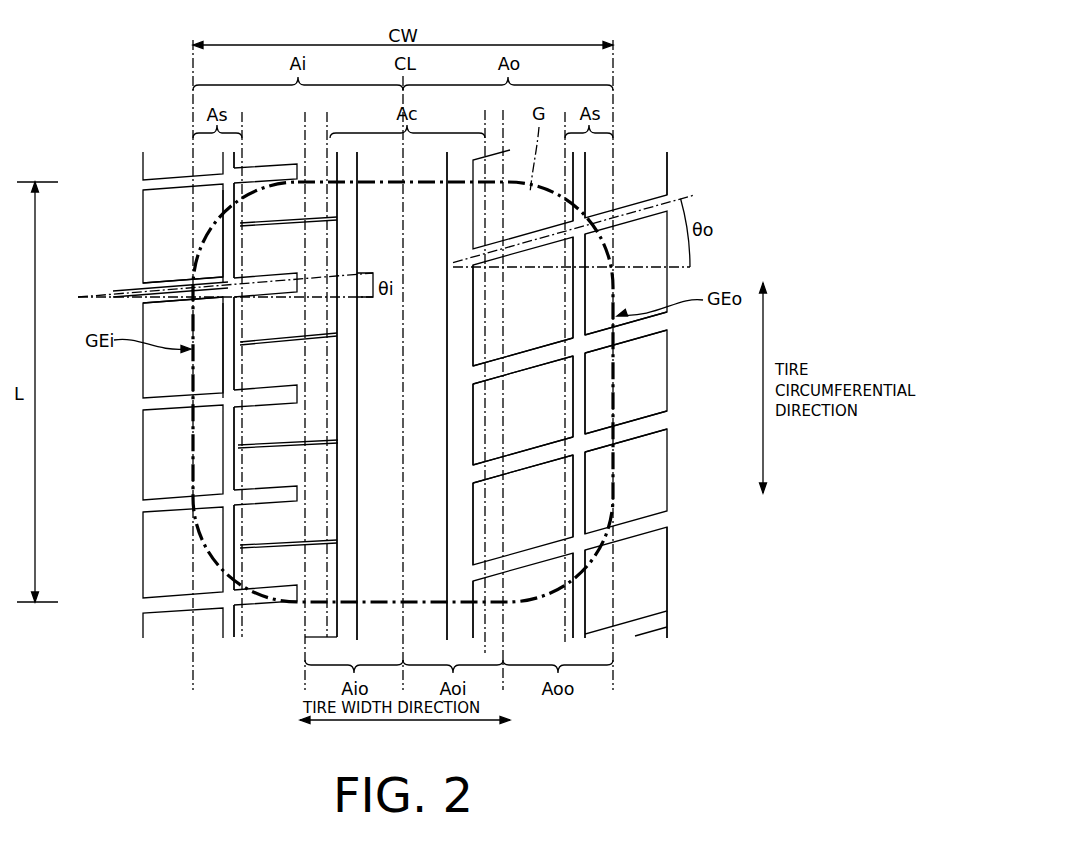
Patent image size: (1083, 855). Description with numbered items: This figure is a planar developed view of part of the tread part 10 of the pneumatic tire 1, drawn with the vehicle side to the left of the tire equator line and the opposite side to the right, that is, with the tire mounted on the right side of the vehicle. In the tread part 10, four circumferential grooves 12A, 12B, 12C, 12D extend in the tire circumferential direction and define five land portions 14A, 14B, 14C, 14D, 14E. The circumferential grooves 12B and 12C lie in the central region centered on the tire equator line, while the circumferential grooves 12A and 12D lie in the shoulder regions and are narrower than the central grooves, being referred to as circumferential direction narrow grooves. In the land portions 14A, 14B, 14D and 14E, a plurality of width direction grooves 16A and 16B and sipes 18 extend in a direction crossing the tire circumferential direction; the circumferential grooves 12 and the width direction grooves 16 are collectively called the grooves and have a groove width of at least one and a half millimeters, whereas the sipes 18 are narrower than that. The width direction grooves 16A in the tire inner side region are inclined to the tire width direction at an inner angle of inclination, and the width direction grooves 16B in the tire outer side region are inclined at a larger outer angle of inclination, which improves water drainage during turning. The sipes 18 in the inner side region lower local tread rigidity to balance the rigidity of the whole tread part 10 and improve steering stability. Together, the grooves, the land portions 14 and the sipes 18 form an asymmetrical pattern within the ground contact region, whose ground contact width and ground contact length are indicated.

The pneumatic tire 1 is at (692, 79).
The tread part 10 is at (674, 170).
The circumferential grooves 12 is at (383, 372).
The circumferential direction narrow groove 12A is at (228, 160).
The circumferential groove 12B is at (347, 230).
The circumferential groove 12C is at (453, 228).
The circumferential direction narrow groove 12D is at (584, 160).
The land portions 14 is at (398, 410).
The land portion 14A is at (152, 437).
The land portion 14B is at (277, 568).
The land portion 14C is at (382, 568).
The land portion 14D is at (535, 523).
The land portion 14E is at (653, 402).
The width direction grooves 16 is at (407, 341).
The width direction grooves 16A is at (180, 284).
The width direction grooves 16B is at (625, 432).
The sipes 18 is at (273, 343).